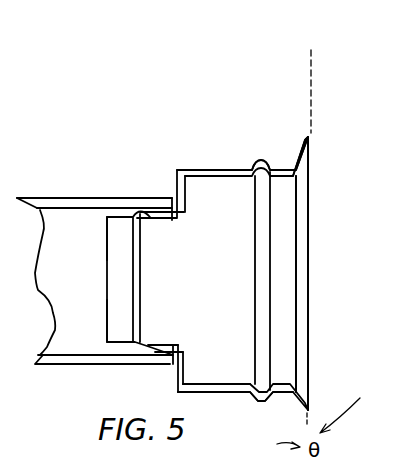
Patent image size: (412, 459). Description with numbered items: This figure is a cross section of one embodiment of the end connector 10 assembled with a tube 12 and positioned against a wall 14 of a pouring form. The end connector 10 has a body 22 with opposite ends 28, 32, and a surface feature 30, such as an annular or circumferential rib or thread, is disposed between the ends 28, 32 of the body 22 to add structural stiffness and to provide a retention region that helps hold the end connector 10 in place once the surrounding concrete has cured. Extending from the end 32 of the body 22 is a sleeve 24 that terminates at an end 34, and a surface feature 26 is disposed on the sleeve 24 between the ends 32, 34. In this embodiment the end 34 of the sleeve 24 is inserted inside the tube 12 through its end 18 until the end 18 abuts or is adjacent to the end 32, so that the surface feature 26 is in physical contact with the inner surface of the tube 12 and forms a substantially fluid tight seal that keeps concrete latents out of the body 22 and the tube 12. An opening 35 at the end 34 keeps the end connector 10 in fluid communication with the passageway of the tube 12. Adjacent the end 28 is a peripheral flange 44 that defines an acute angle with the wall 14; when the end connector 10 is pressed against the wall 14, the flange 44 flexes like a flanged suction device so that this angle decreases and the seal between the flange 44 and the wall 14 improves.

The end connector 10 is at (235, 392).
The tube 12 is at (52, 197).
The wall 14 is at (319, 63).
The end 18 is at (155, 197).
The body 22 is at (213, 167).
The sleeve 24 is at (110, 210).
The surface feature 26 is at (133, 210).
The end 28 is at (309, 260).
The surface feature 30 is at (257, 158).
The end 32 is at (185, 367).
The end 34 is at (107, 225).
The opening 35 is at (107, 314).
The peripheral flange 44 is at (300, 140).